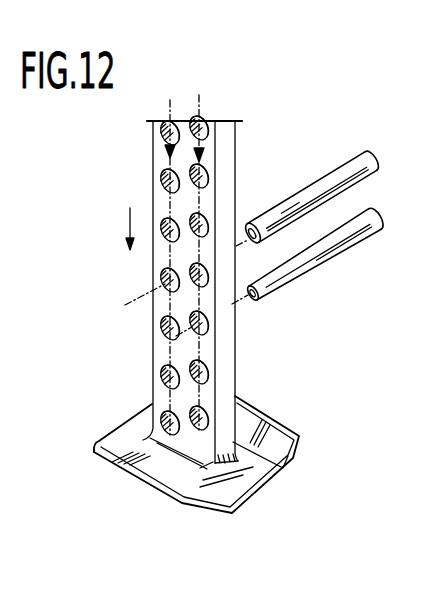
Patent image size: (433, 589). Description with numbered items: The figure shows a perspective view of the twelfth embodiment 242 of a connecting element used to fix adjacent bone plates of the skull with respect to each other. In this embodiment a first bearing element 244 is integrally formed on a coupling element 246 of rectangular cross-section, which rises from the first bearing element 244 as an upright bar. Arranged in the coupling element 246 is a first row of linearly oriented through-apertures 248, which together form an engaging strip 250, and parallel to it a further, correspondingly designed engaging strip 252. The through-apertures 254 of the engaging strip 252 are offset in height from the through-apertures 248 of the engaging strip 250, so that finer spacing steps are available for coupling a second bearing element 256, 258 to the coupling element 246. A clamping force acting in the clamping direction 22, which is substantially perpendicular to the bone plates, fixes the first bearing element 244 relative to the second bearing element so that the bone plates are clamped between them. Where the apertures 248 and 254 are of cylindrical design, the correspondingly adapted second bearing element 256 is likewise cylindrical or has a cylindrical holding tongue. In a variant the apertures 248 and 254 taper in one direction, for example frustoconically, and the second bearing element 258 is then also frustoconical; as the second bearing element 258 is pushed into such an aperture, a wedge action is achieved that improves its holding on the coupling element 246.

The clamping direction 22 is at (130, 215).
The twelfth embodiment 242 is at (280, 106).
The first bearing element 244 is at (270, 507).
The coupling element 246 is at (250, 359).
The through-apertures 248 is at (162, 175).
The engaging strip 250 is at (173, 143).
The engaging strip 252 is at (206, 130).
The through-apertures 254 is at (208, 173).
The second bearing element 256 is at (338, 178).
The second bearing element 258 is at (341, 254).